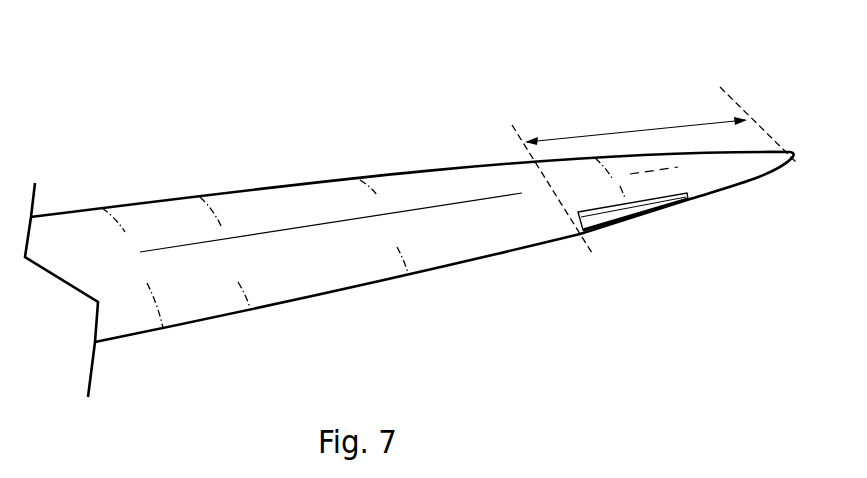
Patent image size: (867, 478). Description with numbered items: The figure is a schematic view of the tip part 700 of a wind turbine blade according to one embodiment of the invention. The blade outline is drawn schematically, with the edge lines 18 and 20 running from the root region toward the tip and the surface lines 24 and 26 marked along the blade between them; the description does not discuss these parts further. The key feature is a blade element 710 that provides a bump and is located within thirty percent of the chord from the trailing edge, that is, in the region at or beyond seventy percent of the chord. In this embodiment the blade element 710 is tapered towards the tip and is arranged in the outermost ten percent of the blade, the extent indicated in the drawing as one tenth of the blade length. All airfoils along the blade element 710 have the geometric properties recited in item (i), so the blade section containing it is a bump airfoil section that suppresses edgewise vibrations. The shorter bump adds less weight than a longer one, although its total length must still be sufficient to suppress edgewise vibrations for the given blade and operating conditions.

The tip part 700 is at (143, 24).
The leading edge 18 is at (123, 203).
The trailing edge 20 is at (148, 332).
The pressure side surface 24 is at (392, 187).
The suction side / chord line 26 is at (272, 207).
The blade element 710 is at (650, 205).